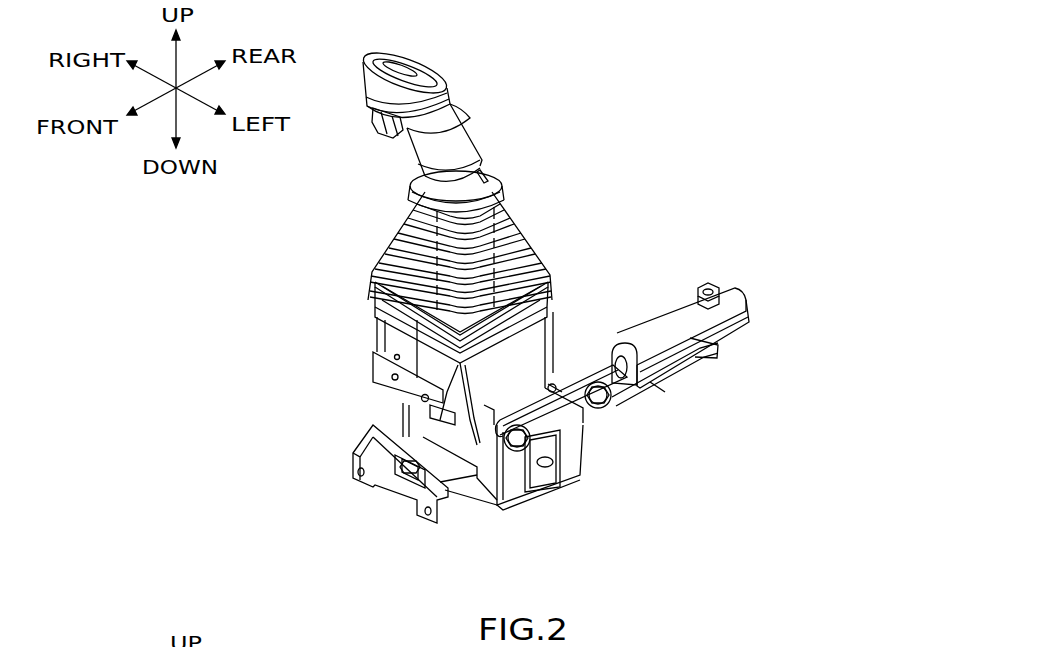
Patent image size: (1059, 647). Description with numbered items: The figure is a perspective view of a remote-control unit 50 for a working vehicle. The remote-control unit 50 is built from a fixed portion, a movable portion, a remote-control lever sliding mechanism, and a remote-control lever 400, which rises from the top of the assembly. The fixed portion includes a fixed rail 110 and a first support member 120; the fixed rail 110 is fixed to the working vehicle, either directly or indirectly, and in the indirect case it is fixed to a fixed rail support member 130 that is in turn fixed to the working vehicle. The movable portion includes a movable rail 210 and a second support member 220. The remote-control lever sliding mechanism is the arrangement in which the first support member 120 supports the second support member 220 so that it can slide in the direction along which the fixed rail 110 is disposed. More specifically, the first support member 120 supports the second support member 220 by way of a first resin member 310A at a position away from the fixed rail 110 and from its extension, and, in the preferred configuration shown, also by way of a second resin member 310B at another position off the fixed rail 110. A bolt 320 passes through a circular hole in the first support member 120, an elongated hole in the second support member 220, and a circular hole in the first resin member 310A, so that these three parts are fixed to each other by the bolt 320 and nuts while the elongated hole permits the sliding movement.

The remote-control unit 50 is at (720, 63).
The fixed rail 110 is at (390, 497).
The first support member 120 is at (570, 447).
The fixed rail support member 130 is at (687, 367).
The movable rail 210 is at (668, 318).
The second support member 220 is at (613, 348).
The first resin member 310A is at (587, 379).
The second resin member 310B is at (493, 440).
The bolt 320 is at (523, 445).
The remote-control lever 400 is at (465, 109).